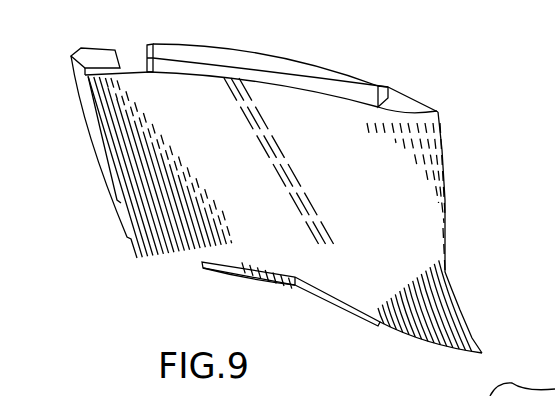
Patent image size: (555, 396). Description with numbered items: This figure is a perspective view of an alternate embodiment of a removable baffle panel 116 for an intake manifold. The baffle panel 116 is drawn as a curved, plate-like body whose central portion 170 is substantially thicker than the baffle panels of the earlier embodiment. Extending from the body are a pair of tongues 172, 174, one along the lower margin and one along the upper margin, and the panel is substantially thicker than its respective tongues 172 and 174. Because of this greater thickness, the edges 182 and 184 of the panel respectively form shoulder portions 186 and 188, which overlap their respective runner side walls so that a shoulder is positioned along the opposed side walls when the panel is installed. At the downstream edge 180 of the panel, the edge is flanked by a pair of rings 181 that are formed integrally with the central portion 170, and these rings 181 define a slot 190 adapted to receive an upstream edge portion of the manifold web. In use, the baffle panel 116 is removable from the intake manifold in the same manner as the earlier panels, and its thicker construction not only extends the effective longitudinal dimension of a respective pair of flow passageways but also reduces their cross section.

The baffle panel 116 is at (388, 56).
The central portion 170 is at (243, 178).
The tongue 172 is at (218, 268).
The tongue 174 is at (264, 53).
The downstream edge 180 is at (114, 62).
The rings 181 is at (113, 160).
The edge 182 is at (413, 337).
The edge 184 is at (408, 110).
The shoulder portion 186 is at (293, 283).
The shoulder portion 188 is at (168, 72).
The slot 190 is at (120, 200).